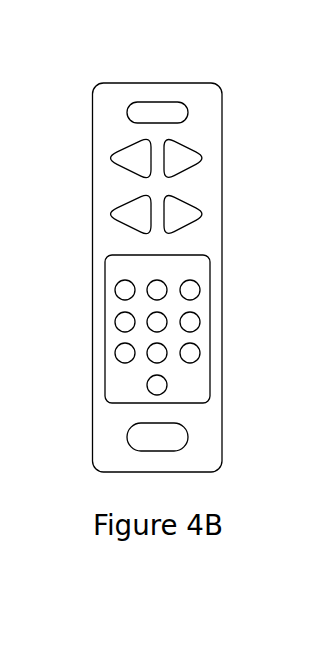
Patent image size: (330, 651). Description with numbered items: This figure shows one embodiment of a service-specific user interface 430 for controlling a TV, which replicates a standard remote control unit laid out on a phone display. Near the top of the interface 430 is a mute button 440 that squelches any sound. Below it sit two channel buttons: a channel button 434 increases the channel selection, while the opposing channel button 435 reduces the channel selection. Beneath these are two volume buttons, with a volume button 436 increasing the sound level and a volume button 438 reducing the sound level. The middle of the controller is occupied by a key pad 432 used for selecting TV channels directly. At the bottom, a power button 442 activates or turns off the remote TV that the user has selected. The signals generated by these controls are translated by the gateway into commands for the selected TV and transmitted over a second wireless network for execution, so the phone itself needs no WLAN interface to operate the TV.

The service-specific user interface 430 is at (81, 88).
The mute button 440 is at (188, 112).
The channel button 435 is at (104, 158).
The channel button 434 is at (208, 158).
The volume button 436 is at (104, 214).
The volume button 438 is at (208, 214).
The key pad 432 is at (210, 288).
The power button 442 is at (188, 437).